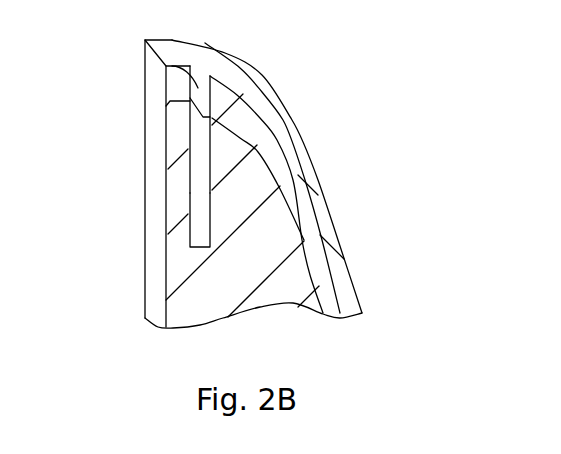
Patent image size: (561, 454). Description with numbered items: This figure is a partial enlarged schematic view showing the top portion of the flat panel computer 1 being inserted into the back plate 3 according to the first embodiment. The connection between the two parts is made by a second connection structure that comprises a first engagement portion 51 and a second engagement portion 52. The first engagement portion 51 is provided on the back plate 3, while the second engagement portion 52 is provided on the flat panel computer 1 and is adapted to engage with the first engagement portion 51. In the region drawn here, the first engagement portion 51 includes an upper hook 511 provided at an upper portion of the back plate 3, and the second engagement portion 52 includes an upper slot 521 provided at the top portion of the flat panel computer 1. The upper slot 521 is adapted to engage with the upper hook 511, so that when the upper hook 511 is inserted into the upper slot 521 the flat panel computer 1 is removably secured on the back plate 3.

The flat panel computer 1 is at (277, 213).
The back plate 3 is at (338, 262).
The first engagement portion 51 is at (215, 83).
The upper hook 511 is at (164, 66).
The second engagement portion 52 is at (184, 142).
The upper slot 521 is at (195, 192).